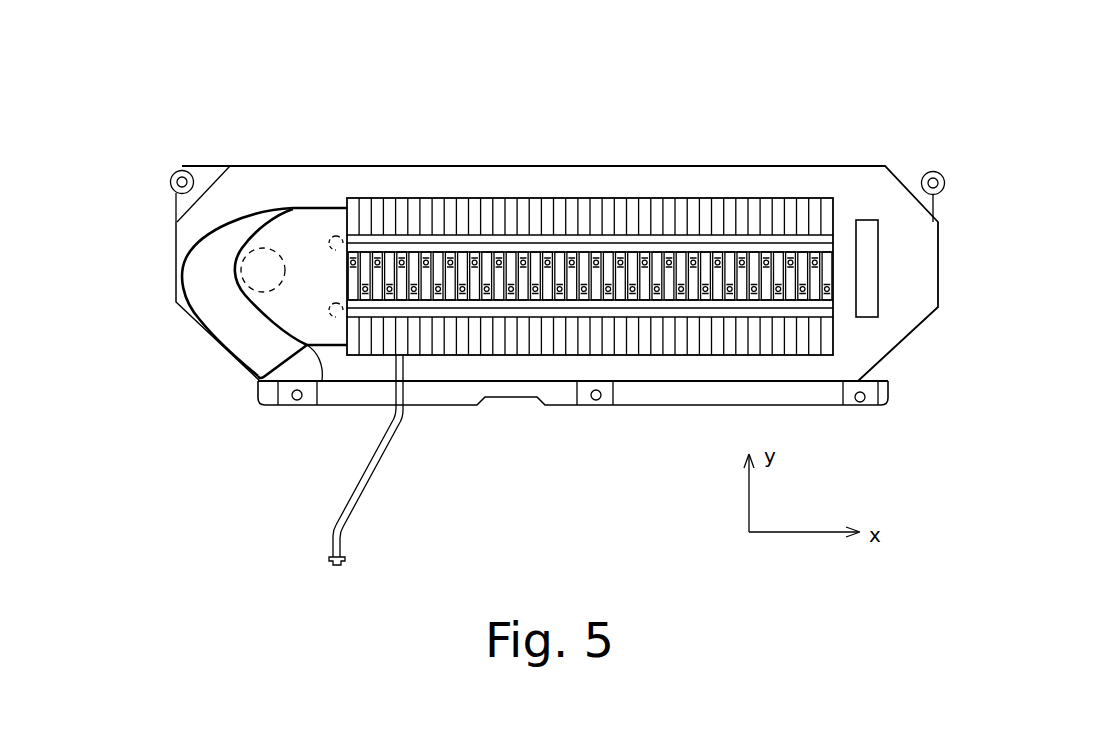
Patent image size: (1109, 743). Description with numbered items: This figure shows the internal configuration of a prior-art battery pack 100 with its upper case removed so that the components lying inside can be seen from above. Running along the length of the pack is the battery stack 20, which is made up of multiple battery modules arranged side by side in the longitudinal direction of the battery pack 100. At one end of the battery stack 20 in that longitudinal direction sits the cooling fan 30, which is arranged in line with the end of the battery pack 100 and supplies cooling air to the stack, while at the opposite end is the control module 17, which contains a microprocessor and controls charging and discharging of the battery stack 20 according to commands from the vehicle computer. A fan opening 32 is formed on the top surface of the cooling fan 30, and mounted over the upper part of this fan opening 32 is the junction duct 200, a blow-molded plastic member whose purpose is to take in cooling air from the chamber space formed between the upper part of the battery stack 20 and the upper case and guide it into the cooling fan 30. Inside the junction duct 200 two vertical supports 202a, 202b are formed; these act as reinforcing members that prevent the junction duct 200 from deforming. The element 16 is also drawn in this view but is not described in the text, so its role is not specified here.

The battery pack 100 is at (814, 101).
The cooling fan 30 is at (265, 172).
The side wall of housing 16 is at (175, 285).
The junction duct 200 is at (316, 218).
The fan opening 32 is at (250, 280).
The vertical support 202a is at (337, 242).
The vertical support 202b is at (337, 314).
The battery stack 20 is at (633, 197).
The control module 17 is at (867, 300).